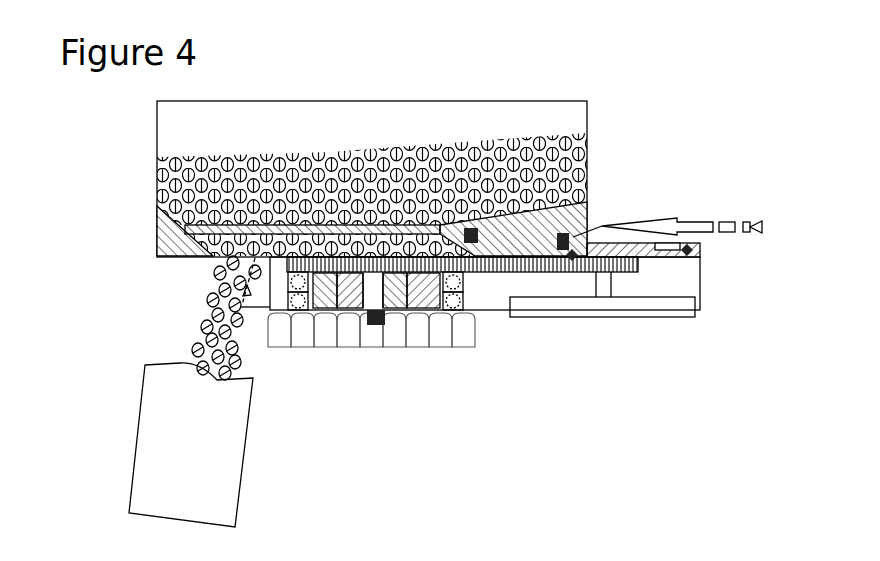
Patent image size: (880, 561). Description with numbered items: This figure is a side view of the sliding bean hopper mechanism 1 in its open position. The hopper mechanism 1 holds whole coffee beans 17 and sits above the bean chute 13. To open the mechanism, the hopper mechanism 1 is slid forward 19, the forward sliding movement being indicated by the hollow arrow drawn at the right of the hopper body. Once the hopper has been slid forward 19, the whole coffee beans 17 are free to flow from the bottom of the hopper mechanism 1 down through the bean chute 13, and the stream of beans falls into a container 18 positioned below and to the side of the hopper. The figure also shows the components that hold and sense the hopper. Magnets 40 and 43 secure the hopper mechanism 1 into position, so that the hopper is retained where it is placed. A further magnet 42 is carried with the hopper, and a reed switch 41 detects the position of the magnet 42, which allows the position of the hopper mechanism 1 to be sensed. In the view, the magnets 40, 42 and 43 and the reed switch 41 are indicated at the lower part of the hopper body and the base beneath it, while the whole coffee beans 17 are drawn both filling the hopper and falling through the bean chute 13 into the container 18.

The sliding bean hopper mechanism 1 is at (587, 180).
The bean chute 13 is at (246, 303).
The whole coffee beans 17 is at (196, 336).
The container 18 is at (252, 456).
The slid forward direction 19 is at (762, 228).
The magnet 40 is at (478, 230).
The reed switch 41 is at (690, 252).
The magnet 42 is at (576, 236).
The magnet 43 is at (572, 257).